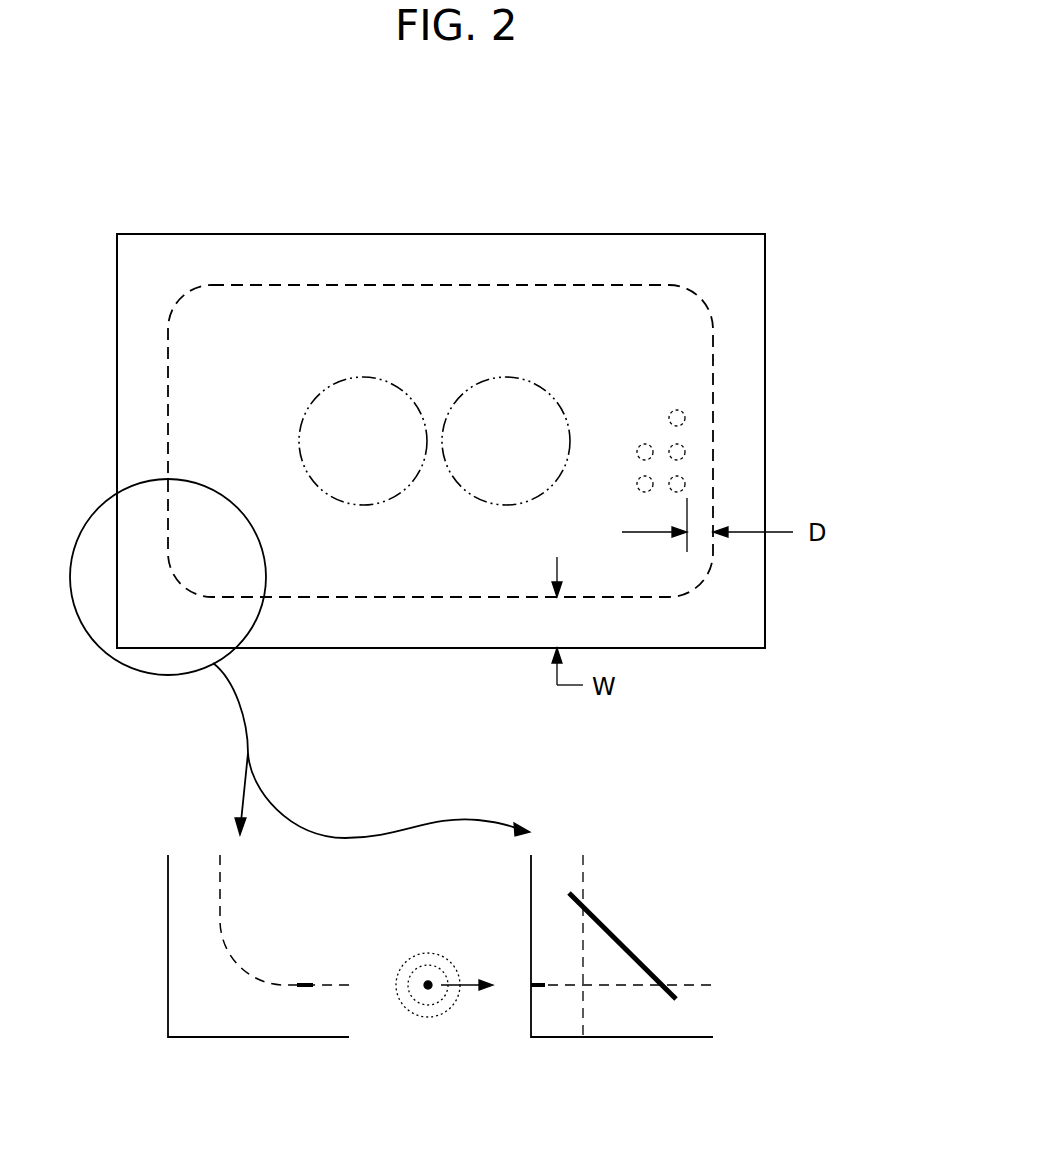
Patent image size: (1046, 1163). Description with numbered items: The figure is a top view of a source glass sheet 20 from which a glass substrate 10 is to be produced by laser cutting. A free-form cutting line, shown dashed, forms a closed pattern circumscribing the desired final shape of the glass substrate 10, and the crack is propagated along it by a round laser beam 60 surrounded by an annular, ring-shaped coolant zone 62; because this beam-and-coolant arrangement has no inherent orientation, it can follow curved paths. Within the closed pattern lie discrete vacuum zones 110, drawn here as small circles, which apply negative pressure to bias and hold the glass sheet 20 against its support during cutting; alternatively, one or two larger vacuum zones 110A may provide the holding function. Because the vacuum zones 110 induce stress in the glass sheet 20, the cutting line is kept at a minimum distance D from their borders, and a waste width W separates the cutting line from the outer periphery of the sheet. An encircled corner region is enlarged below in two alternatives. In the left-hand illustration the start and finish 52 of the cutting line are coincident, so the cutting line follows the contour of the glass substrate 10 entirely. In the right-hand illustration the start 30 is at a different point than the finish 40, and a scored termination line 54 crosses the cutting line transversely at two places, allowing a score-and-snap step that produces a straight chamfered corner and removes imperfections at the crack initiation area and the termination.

The glass substrate 10 is at (376, 283).
The source glass sheet 20 is at (583, 233).
The larger vacuum zones 110A is at (506, 378).
The vacuum zones 110 is at (678, 408).
The start of the cutting line 30 is at (525, 985).
The finish of the cutting line 40 is at (588, 991).
The start and finish of the cutting line (initial crack) 52 is at (303, 978).
The termination line 54 is at (652, 967).
The laser beam 60 is at (427, 988).
The coolant zone 62 is at (452, 1008).